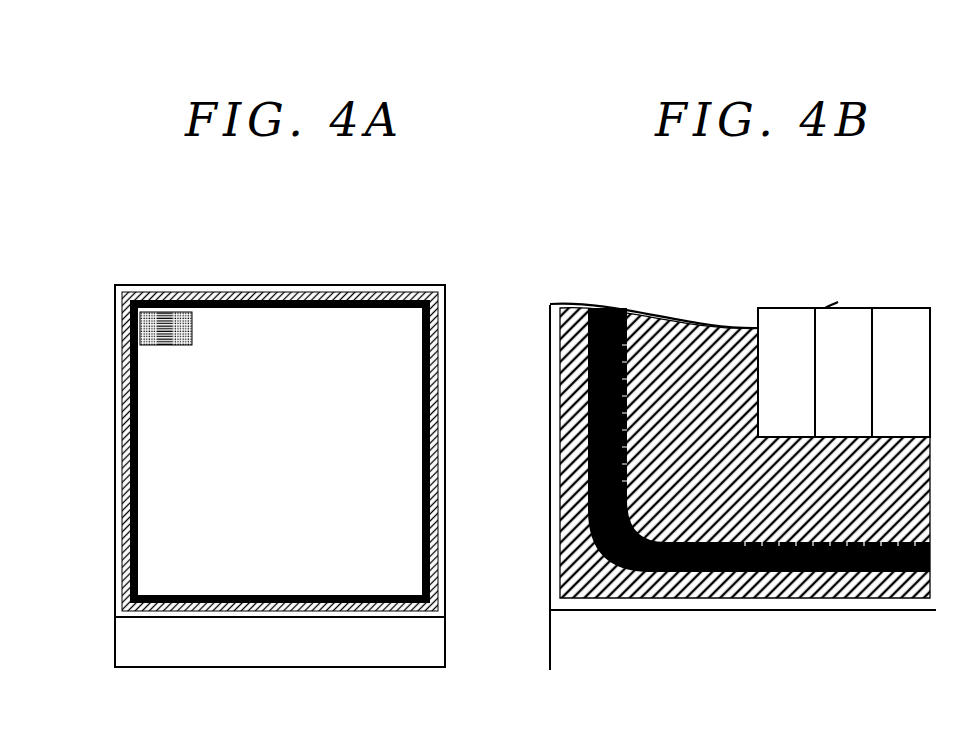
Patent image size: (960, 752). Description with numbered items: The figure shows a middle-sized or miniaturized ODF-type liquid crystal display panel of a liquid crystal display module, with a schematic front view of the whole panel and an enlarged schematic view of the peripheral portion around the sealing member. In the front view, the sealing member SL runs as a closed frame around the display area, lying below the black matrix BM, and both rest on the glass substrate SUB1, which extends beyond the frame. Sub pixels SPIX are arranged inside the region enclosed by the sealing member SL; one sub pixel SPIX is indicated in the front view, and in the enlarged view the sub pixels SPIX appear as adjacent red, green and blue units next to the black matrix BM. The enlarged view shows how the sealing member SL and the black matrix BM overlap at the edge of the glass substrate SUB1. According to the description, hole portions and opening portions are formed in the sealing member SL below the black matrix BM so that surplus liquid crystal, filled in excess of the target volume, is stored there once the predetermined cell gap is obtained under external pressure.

In FIG. 4A, the sub pixels SPIX is at (165, 293).
In FIG. 4B, the sub pixels SPIX is at (872, 308).
In FIG. 4A, the sealing member SL is at (428, 290).
In FIG. 4B, the sealing member SL is at (502, 247).
In FIG. 4A, the black matrix BM is at (437, 402).
In FIG. 4B, the black matrix BM is at (556, 430).
In FIG. 4A, the glass substrate SUB1 is at (433, 641).
In FIG. 4B, the glass substrate SUB1 is at (565, 637).